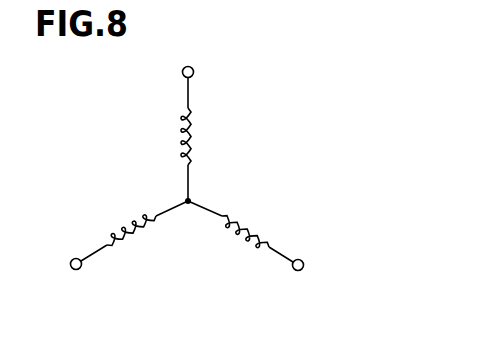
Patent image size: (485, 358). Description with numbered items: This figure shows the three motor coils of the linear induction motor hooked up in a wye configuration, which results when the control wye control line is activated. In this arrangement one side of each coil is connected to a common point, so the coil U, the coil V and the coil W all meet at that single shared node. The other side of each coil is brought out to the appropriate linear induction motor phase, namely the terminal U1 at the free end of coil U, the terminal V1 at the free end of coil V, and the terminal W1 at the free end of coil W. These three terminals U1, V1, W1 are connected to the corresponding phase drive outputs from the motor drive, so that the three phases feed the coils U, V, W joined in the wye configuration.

The U-phase terminal U1 is at (188, 72).
The U-phase winding U is at (196, 136).
The V-phase winding V is at (131, 223).
The V-phase terminal V1 is at (74, 265).
The W-phase winding W is at (245, 225).
The W-phase terminal W1 is at (306, 267).